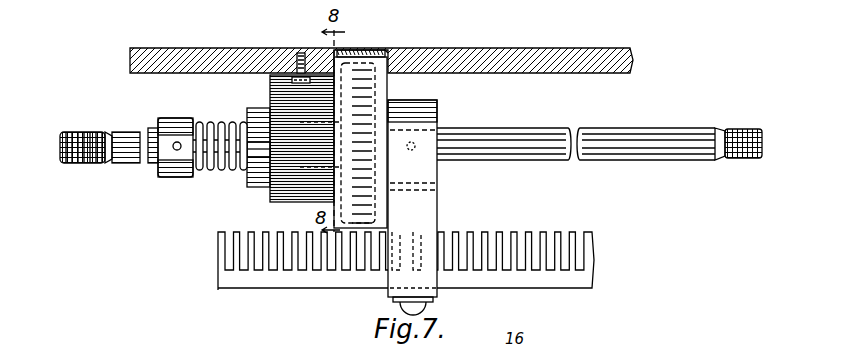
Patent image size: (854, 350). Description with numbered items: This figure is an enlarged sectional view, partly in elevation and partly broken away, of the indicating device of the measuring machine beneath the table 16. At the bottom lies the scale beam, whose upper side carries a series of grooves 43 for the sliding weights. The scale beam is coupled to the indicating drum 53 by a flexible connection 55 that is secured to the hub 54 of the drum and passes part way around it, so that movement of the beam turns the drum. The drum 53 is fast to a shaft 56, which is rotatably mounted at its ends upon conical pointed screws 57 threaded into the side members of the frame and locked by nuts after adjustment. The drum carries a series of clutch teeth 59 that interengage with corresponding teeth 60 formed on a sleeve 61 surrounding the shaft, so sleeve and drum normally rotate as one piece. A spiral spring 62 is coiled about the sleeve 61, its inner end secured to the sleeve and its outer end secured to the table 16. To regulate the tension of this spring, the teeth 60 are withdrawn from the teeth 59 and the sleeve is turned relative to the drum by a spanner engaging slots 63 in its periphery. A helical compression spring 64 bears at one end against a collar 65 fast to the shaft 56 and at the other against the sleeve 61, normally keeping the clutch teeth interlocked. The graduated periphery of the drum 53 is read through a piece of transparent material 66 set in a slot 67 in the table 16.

The table 16 is at (471, 48).
The grooves 43 is at (270, 272).
The drum 53 is at (383, 209).
The hub 54 is at (437, 192).
The flexible connection 55 is at (408, 104).
The shaft 56 is at (524, 129).
The conical pointed screws 57 is at (111, 131).
The clutch teeth 59 is at (332, 146).
The teeth 60 is at (360, 142).
The sleeve 61 is at (265, 190).
The spiral spring 62 is at (290, 204).
The slots 63 is at (256, 168).
The helical compression spring 64 is at (220, 126).
The collar 65 is at (180, 120).
The transparent material 66 is at (380, 52).
The slot 67 is at (389, 50).